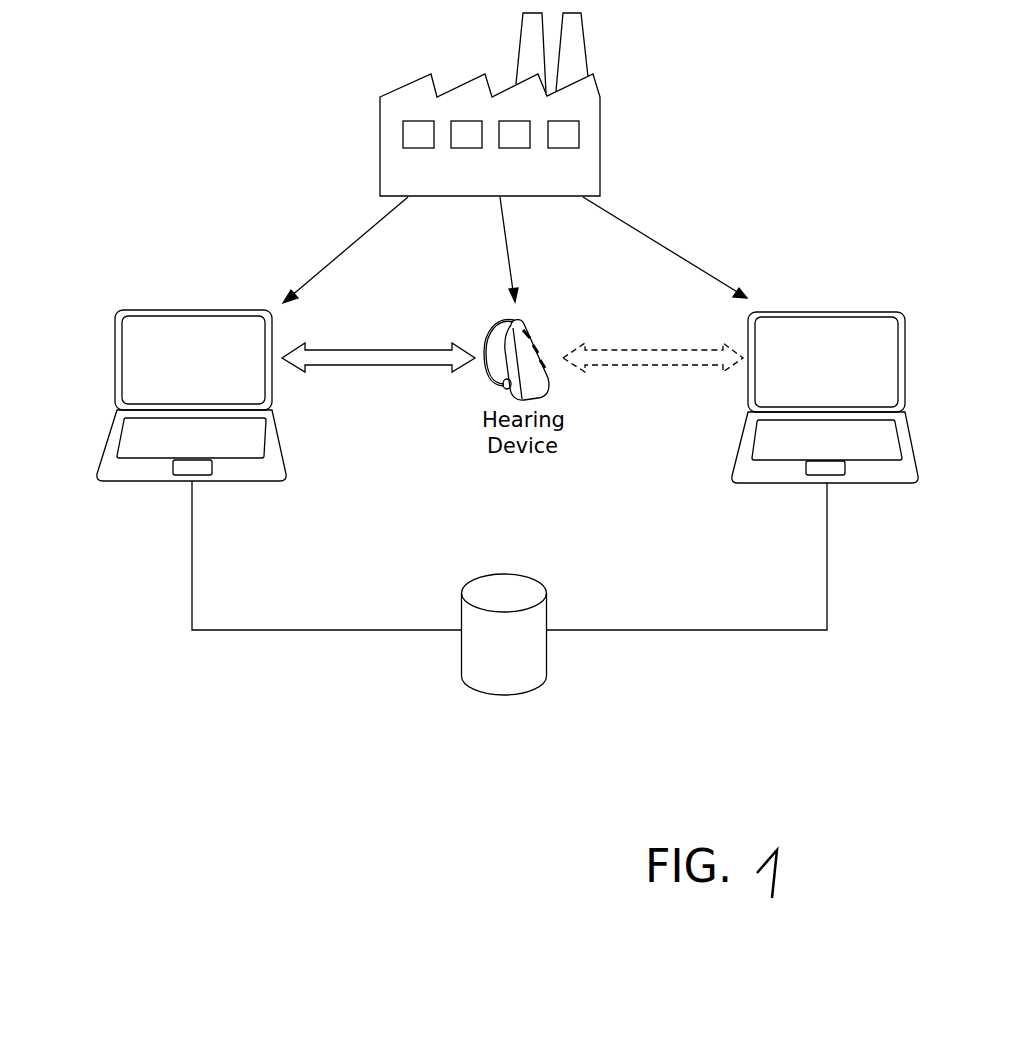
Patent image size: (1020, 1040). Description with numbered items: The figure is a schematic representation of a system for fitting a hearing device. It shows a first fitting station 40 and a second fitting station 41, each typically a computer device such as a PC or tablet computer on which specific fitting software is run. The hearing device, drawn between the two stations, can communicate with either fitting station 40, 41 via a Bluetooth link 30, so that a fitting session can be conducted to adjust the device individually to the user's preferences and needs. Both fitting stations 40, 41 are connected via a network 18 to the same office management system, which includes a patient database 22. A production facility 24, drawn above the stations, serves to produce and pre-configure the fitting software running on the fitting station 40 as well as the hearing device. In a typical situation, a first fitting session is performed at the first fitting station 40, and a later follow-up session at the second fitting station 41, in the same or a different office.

The network 18 is at (285, 630).
The patient database 22 is at (540, 653).
The production facility 24 is at (597, 108).
The Bluetooth link 30 is at (378, 360).
The first fitting station 40 is at (137, 345).
The second fitting station 41 is at (862, 340).